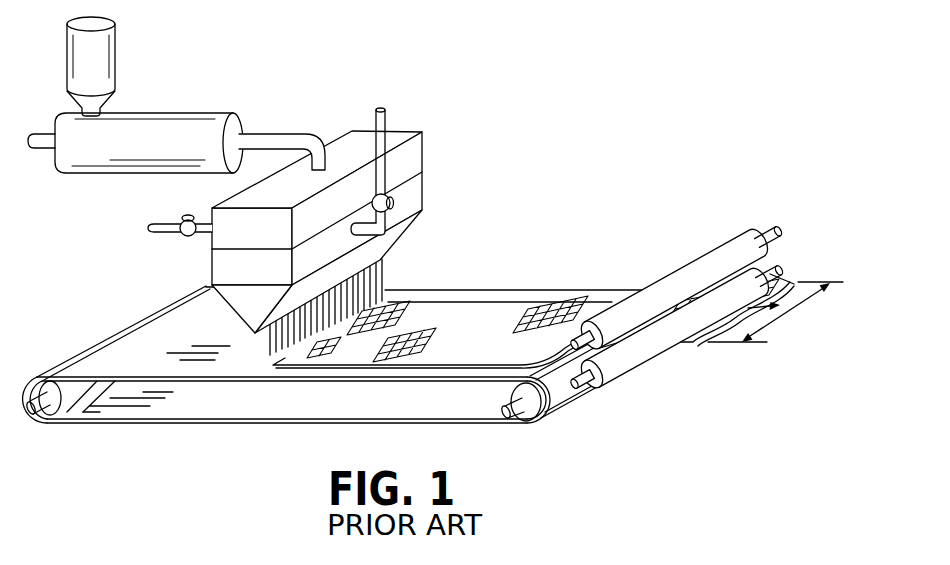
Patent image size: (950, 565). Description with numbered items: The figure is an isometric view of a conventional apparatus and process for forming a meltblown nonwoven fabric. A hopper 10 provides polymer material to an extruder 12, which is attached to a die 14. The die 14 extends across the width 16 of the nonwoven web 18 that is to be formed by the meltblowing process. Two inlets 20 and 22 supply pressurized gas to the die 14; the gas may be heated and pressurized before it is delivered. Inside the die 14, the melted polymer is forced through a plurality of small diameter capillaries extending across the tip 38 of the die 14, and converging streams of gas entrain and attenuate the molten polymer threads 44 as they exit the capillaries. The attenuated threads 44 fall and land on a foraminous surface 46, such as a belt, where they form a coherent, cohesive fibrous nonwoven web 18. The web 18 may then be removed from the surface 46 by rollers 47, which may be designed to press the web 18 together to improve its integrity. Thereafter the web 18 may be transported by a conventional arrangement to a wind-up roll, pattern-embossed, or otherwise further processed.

The hopper 10 is at (67, 68).
The extruder 12 is at (208, 112).
The die 14 is at (342, 290).
The width 16 is at (795, 318).
The nonwoven web 18 is at (497, 315).
The inlet 20 is at (386, 110).
The inlet 22 is at (165, 222).
The tip 38 is at (257, 335).
The molten polymer threads 44 is at (392, 270).
The foraminous surface 46 is at (137, 346).
The rollers 47 is at (648, 291).